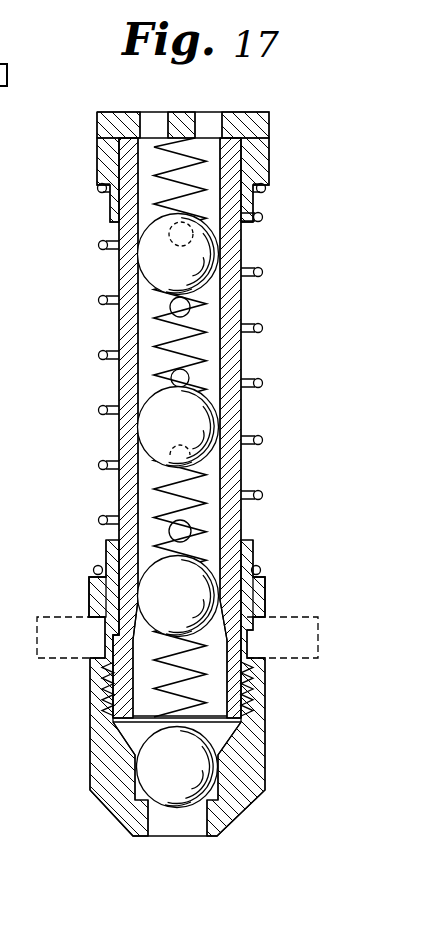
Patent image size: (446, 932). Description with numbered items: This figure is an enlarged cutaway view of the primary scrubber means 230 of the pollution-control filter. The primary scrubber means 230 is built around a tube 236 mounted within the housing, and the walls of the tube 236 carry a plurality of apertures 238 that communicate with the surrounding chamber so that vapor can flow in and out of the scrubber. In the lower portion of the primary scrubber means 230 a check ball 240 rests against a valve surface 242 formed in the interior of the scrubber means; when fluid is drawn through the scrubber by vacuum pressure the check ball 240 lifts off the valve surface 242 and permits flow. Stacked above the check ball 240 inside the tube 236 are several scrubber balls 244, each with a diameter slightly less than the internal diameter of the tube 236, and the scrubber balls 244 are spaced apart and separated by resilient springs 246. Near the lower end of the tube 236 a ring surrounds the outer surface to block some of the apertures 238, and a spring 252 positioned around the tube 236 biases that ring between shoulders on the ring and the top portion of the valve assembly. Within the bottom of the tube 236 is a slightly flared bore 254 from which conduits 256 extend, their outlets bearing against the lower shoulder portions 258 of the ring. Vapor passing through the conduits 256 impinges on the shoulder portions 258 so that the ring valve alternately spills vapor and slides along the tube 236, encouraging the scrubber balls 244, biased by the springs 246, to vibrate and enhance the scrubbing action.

The primary scrubber means 230 is at (262, 416).
The tube 236 is at (245, 362).
The apertures 238 is at (128, 393).
The check ball 240 is at (237, 738).
The valve surface 242 is at (147, 793).
The scrubber balls 244 is at (220, 232).
The springs 246 is at (195, 328).
The spring 252 is at (117, 296).
The flared bore 254 is at (208, 690).
The conduit 256 is at (93, 614).
The lower shoulder portions 258 is at (92, 592).